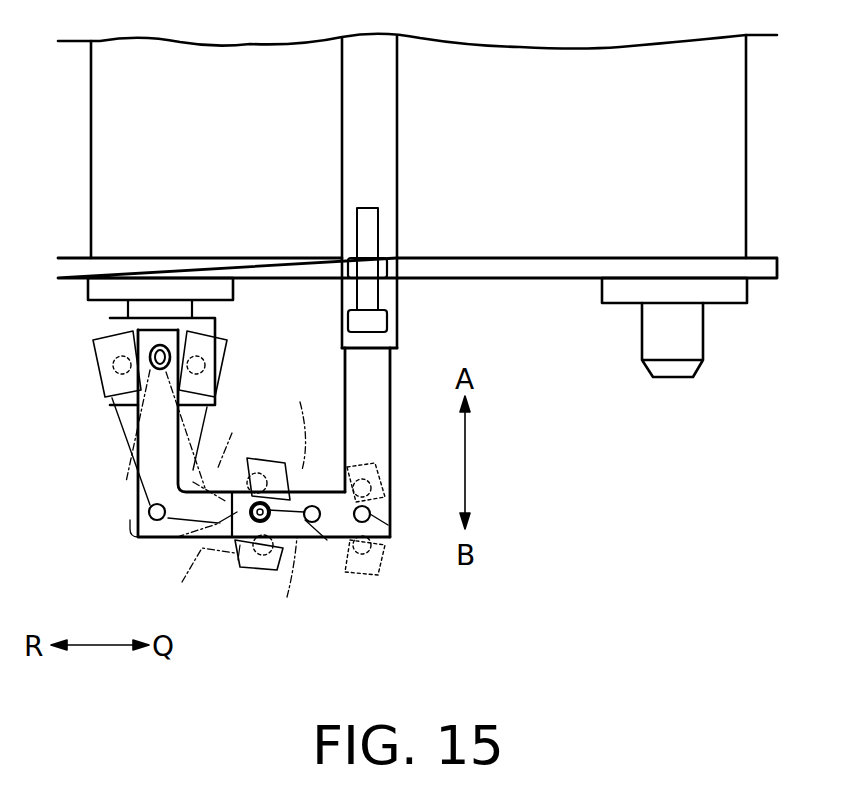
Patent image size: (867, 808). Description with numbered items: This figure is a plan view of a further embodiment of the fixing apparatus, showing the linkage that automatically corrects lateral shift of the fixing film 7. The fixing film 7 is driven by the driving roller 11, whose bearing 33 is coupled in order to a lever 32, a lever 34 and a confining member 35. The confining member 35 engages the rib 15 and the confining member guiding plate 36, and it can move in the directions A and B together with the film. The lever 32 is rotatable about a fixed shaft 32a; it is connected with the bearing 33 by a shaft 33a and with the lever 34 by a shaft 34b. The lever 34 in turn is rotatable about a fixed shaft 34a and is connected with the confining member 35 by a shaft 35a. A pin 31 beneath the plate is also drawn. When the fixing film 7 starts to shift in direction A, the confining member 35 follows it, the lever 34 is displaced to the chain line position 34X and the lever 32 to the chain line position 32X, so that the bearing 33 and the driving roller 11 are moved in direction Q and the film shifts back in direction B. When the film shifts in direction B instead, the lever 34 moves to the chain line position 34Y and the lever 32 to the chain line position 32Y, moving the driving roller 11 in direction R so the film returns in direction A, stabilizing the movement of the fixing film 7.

The fixing film 7 is at (723, 209).
The driving roller 11 is at (88, 292).
The rib 15 is at (557, 273).
The pin 31 is at (687, 347).
The lever 32 is at (198, 545).
The fixed shaft 32a is at (132, 533).
The chain line position 32X is at (193, 579).
The chain line position 32Y is at (249, 436).
The bearing 33 is at (108, 330).
The shaft 33a is at (147, 373).
The lever 34 is at (315, 540).
The fixed shaft 34a is at (327, 540).
The shaft 34b is at (238, 560).
The chain line position 34X is at (289, 581).
The chain line position 34Y is at (299, 418).
The confining member 35 is at (372, 438).
The shaft 35a is at (390, 523).
The confining member guiding plate 36 is at (375, 167).